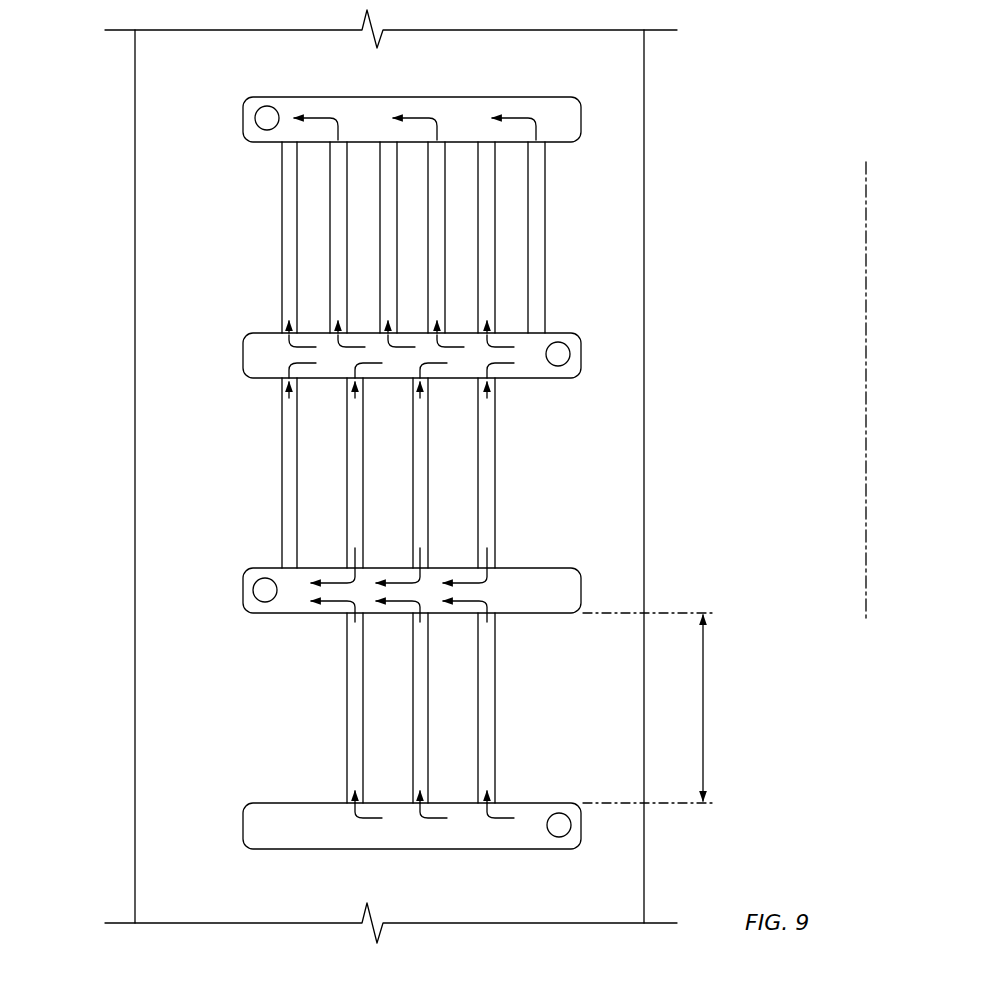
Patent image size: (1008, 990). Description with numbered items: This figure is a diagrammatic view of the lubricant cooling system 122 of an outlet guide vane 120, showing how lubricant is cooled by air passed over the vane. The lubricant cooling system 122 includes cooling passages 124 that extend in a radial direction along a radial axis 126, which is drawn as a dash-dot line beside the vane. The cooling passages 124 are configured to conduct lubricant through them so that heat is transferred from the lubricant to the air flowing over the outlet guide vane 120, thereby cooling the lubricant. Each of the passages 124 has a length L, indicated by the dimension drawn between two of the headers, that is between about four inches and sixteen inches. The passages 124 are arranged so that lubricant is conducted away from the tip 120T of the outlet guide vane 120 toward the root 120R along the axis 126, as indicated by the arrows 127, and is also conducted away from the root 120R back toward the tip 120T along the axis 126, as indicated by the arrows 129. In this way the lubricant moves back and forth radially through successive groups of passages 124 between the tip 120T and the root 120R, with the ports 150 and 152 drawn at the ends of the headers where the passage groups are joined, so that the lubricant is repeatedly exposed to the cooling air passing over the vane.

The outlet guide vane 120 is at (649, 96).
The tip 120T is at (517, 93).
The root 120R is at (270, 862).
The lubricant cooling system 122 is at (156, 207).
The cooling passages 124 is at (388, 231).
The radial axis 126 is at (864, 415).
The arrows 127 is at (405, 386).
The arrows 129 is at (465, 621).
The port 150 is at (558, 330).
The port 152 is at (267, 102).
The length L is at (701, 708).